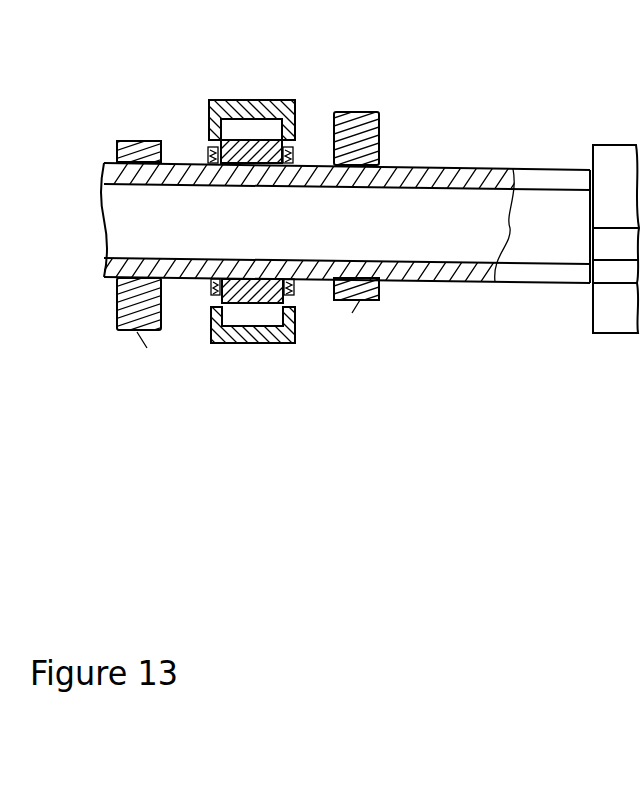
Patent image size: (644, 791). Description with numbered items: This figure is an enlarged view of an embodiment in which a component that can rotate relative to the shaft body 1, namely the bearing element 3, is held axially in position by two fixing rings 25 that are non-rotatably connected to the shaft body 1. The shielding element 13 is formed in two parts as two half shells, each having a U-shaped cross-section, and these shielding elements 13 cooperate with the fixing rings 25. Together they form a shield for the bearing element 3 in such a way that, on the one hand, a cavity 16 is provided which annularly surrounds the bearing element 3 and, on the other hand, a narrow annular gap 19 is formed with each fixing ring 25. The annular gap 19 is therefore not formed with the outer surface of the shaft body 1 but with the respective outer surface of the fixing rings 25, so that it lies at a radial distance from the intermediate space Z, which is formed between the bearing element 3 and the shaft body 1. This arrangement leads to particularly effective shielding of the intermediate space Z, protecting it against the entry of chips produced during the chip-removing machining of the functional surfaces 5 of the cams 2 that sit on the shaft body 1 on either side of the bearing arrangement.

The shaft body 1 is at (533, 197).
The cams 2 is at (118, 302).
The bearing element 3 is at (254, 150).
The functional surfaces 5 is at (137, 332).
The shielding element 13 is at (217, 100).
The cavity 16 is at (252, 312).
The annular gap 19 is at (213, 298).
The fixing rings 25 is at (207, 147).
The intermediate space Z is at (258, 170).